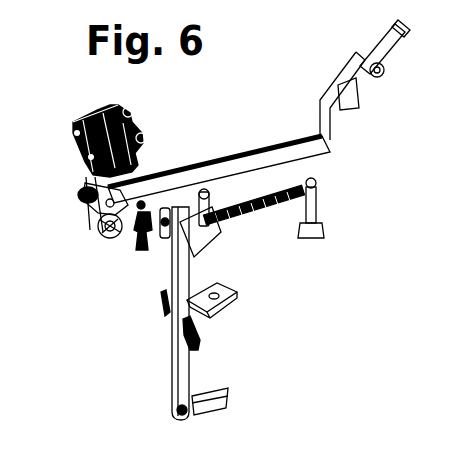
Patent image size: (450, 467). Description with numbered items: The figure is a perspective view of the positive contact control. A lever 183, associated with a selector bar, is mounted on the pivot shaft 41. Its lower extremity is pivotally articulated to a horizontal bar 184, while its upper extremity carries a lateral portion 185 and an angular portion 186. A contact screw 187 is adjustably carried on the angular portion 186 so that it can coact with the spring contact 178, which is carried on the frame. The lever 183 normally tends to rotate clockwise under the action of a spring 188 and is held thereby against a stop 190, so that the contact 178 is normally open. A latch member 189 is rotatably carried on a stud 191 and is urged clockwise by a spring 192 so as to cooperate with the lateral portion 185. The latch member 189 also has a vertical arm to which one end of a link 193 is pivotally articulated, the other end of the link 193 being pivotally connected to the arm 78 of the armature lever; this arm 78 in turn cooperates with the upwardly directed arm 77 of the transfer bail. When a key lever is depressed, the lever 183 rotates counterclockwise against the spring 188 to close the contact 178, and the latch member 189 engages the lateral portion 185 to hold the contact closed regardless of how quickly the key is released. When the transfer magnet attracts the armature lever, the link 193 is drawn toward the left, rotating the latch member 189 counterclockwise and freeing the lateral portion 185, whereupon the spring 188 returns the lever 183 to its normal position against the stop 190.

The pivot shaft 41 is at (200, 338).
The upwardly directed arm 77 is at (356, 101).
The arm of armature lever 78 is at (396, 52).
The spring contact 178 is at (160, 232).
The lever 183 is at (186, 349).
The horizontal bar 184 is at (217, 397).
The lateral portion 185 is at (187, 250).
The angular portion 186 is at (203, 228).
The contact screw 187 is at (218, 200).
The spring 188 is at (313, 183).
The latch member 189 is at (84, 205).
The stop 190 is at (232, 298).
The stud 191 is at (98, 236).
The spring 192 is at (137, 234).
The link 193 is at (288, 142).